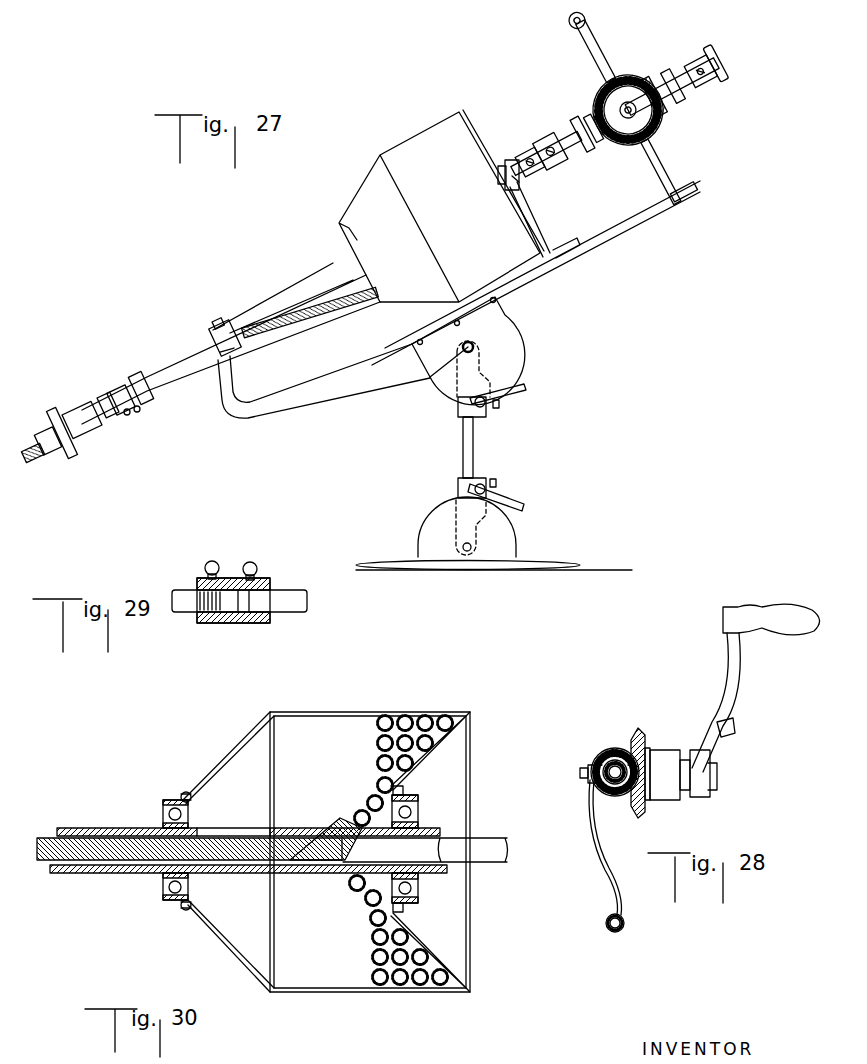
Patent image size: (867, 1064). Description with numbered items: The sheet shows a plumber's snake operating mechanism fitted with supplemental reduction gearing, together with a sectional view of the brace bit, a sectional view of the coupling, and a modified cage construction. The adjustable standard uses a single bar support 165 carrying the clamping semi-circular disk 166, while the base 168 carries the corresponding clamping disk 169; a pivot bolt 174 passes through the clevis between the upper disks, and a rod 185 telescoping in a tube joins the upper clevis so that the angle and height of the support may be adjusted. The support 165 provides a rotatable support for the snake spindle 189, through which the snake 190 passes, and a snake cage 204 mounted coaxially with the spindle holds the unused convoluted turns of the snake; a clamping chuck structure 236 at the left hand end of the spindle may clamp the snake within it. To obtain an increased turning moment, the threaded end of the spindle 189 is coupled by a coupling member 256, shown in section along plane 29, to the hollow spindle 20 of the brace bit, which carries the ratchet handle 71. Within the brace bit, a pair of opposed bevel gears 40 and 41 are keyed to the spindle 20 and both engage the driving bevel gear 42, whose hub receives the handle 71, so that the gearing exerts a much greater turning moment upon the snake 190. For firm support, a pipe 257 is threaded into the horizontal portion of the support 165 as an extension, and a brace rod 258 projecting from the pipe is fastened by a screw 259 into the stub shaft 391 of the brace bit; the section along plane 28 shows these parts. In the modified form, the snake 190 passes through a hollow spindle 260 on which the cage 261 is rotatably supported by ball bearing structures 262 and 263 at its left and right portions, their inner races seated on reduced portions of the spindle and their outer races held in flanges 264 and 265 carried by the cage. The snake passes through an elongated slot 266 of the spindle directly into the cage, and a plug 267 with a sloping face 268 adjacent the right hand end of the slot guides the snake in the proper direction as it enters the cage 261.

In FIG. 27, the hollow spindle 20 is at (678, 67).
In FIG. 29, the hollow spindle 20 is at (287, 600).
In FIG. 28, the hollow spindle 20 is at (615, 760).
In FIG. 27, the section plane 28— 28 is at (597, 62).
In FIG. 27, the section plane 29— 29 is at (560, 118).
In FIG. 27, the bevel gear 40 is at (670, 103).
In FIG. 27, the bevel gear 41 is at (607, 140).
In FIG. 28, the bevel gear 41 is at (598, 793).
In FIG. 27, the driving bevel gear 42 is at (597, 98).
In FIG. 28, the driving bevel gear 42 is at (640, 727).
In FIG. 27, the ratchet handle 71 is at (593, 43).
In FIG. 28, the ratchet handle 71 is at (710, 700).
In FIG. 27, the bar support 165 is at (293, 403).
In FIG. 27, the clamping semi-circular disk 166 is at (512, 348).
In FIG. 27, the base 168 is at (543, 562).
In FIG. 27, the clamping disk 169 is at (428, 532).
In FIG. 27, the pivot bolt 174 is at (432, 377).
In FIG. 27, the rod 185 is at (463, 457).
In FIG. 27, the snake spindle 189 is at (270, 302).
In FIG. 27, the snake 190 is at (317, 313).
In FIG. 30, the snake 190 is at (83, 838).
In FIG. 27, the snake cage 204 is at (409, 152).
In FIG. 27, the clamping chuck structure 236 is at (97, 430).
In FIG. 27, the coupling member 256 is at (548, 147).
In FIG. 29, the coupling member 256 is at (250, 623).
In FIG. 27, the pipe 257 is at (612, 238).
In FIG. 28, the pipe 257 is at (610, 932).
In FIG. 27, the brace rod 258 is at (663, 163).
In FIG. 28, the brace rod 258 is at (598, 847).
In FIG. 27, the screw 259 is at (636, 74).
In FIG. 28, the screw 259 is at (580, 772).
In FIG. 30, the hollow spindle 260 is at (113, 867).
In FIG. 30, the cage 261 is at (318, 712).
In FIG. 30, the ball bearing structure 262 is at (163, 897).
In FIG. 30, the ball bearing structure 263 is at (417, 810).
In FIG. 30, the flange 264 is at (163, 808).
In FIG. 30, the flange 265 is at (420, 893).
In FIG. 30, the elongated slot 266 is at (233, 828).
In FIG. 30, the plug 267 is at (328, 862).
In FIG. 30, the sloping face 268 is at (293, 837).
In FIG. 28, the stub shaft 391 is at (602, 753).